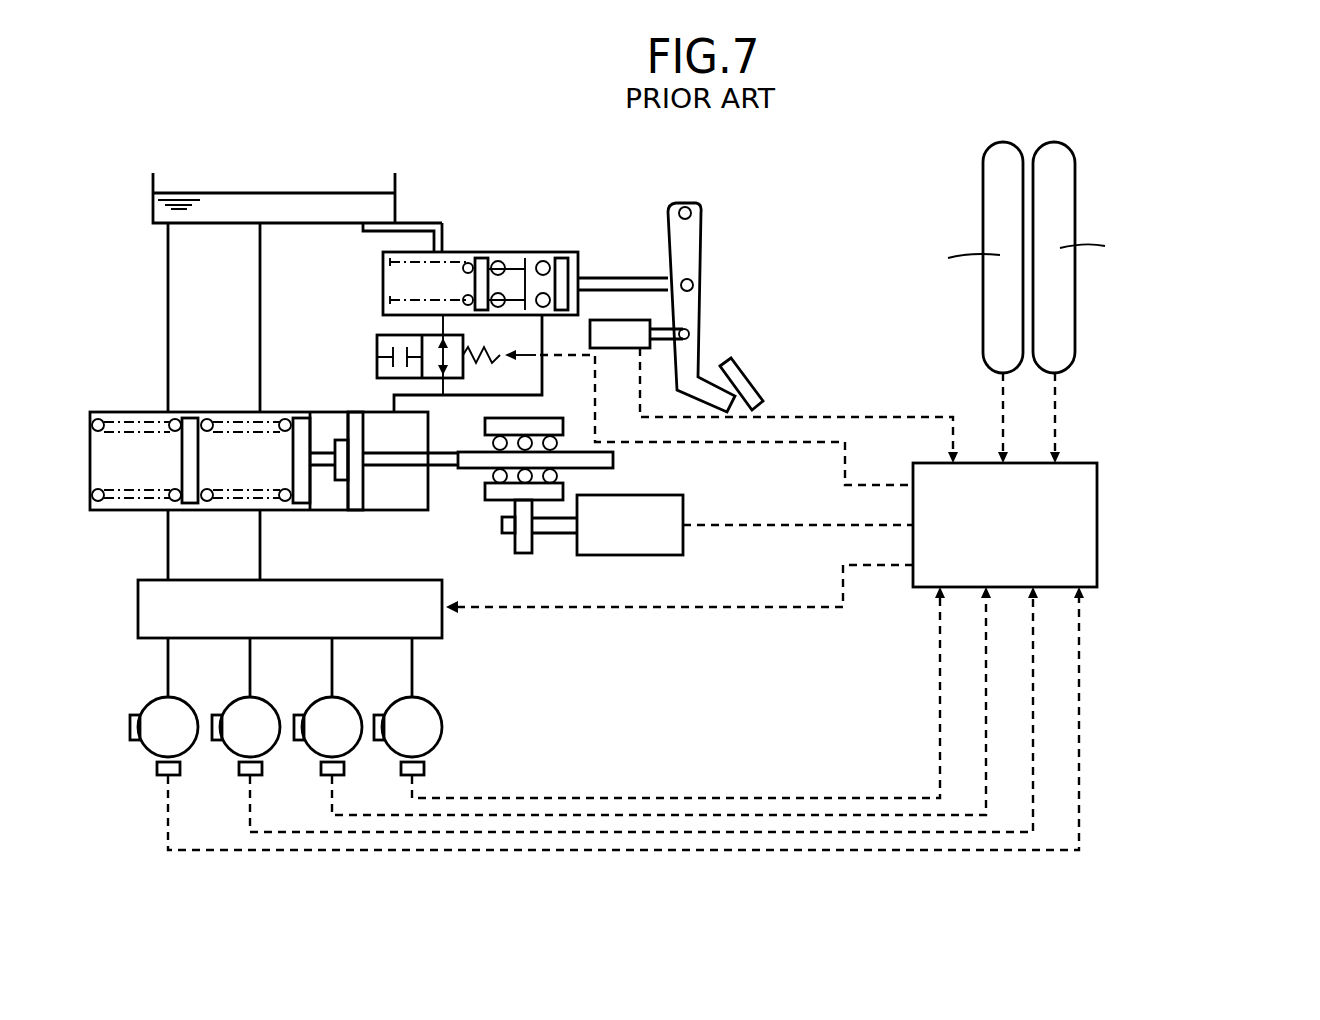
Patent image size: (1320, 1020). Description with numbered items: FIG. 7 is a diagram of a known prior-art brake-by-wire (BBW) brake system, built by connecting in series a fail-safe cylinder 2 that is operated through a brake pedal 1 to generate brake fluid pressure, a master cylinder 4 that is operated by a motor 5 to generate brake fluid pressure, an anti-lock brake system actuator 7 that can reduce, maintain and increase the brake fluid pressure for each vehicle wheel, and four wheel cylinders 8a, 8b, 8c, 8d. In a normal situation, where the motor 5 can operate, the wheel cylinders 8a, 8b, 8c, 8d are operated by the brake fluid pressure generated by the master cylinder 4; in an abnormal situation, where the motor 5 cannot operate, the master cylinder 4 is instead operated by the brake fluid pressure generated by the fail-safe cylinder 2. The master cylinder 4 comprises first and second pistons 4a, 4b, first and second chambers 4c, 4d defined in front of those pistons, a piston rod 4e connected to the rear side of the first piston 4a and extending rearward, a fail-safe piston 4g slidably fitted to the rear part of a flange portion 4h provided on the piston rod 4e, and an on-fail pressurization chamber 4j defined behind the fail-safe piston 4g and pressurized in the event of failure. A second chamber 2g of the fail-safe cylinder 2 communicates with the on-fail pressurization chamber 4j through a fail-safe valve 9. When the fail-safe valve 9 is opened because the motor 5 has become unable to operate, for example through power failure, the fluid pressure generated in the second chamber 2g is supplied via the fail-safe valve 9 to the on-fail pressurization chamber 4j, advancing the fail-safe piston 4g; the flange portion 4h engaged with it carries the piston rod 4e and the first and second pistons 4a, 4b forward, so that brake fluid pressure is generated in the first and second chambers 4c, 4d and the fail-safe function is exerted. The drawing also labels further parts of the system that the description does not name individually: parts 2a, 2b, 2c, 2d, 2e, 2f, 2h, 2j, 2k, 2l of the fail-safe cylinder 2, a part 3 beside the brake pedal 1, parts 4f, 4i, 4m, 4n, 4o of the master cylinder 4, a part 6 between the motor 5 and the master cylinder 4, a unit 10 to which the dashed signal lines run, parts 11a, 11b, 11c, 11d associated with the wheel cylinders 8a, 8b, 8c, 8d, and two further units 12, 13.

The brake pedal 1 is at (733, 307).
The fail-safe cylinder 2 is at (480, 260).
The master cylinder body 2a is at (480, 257).
The input piston 2b is at (565, 255).
The secondary piston 2c is at (467, 255).
The piston seal 2d is at (483, 241).
The first pressure chamber 2e is at (354, 255).
The second chamber 2g is at (338, 273).
The piston seal 2h is at (541, 241).
The output port 2f is at (522, 330).
The output port 2j is at (564, 331).
The reservoir port 2k is at (377, 312).
The reservoir port 2l is at (427, 213).
The pedal stroke sensor 3 is at (774, 391).
The master cylinder 4 is at (261, 454).
The first piston 4a is at (292, 429).
The second piston 4b is at (192, 429).
The first chamber 4c is at (246, 488).
The second chamber 4d is at (131, 486).
The piston rod 4e is at (525, 432).
The reservoir 4f is at (297, 187).
The fail-safe piston 4g is at (365, 488).
The flange portion 4h is at (331, 497).
The reaction chamber 4i is at (410, 503).
The on-fail pressurization chamber 4j is at (437, 363).
The output port 4m is at (297, 541).
The output port 4n is at (185, 541).
The cylinder body 4o is at (259, 432).
The motor 5 is at (745, 502).
The ball screw mechanism 6 is at (508, 491).
The anti-lock brake system (ABS) actuator 7 is at (525, 610).
The wheel cylinder 8a is at (156, 697).
The wheel cylinder 8b is at (237, 697).
The wheel cylinder 8c is at (320, 697).
The wheel cylinder 8d is at (399, 697).
The fail-safe valve 9 is at (621, 400).
The electronic control unit (ECU) 10 is at (972, 552).
The wheel speed sensor 11a is at (597, 718).
The wheel speed sensor 11b is at (615, 709).
The wheel speed sensor 11c is at (633, 701).
The wheel speed sensor 11d is at (649, 698).
The yaw rate sensor 12 is at (922, 274).
The lateral acceleration sensor 13 is at (1168, 274).